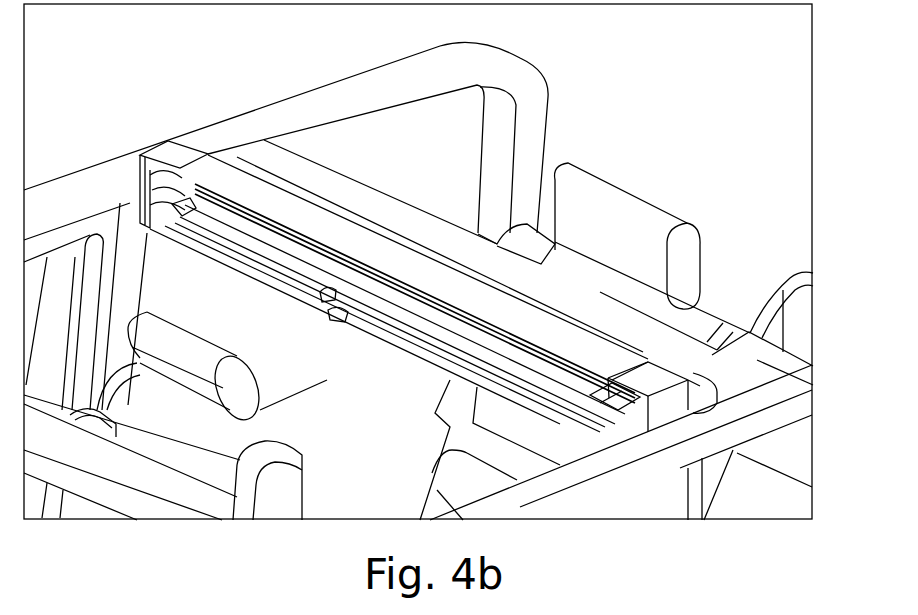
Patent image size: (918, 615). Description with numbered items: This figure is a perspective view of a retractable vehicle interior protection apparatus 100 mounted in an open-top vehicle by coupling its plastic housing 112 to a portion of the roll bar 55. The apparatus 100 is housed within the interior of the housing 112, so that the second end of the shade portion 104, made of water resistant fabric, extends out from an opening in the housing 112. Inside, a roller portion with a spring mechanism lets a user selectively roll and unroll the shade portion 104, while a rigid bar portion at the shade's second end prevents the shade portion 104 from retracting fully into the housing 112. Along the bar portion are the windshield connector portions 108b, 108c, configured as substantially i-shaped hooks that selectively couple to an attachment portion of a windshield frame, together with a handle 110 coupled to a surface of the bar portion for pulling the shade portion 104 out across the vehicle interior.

The roll bar 55 is at (282, 150).
The retractable vehicle interior protection apparatus 100 is at (137, 178).
The shade portion 104 is at (628, 395).
The windshield connector portion 108b is at (340, 322).
The windshield connector portion 108c is at (182, 216).
The handle 110 is at (322, 296).
The housing 112 is at (648, 362).